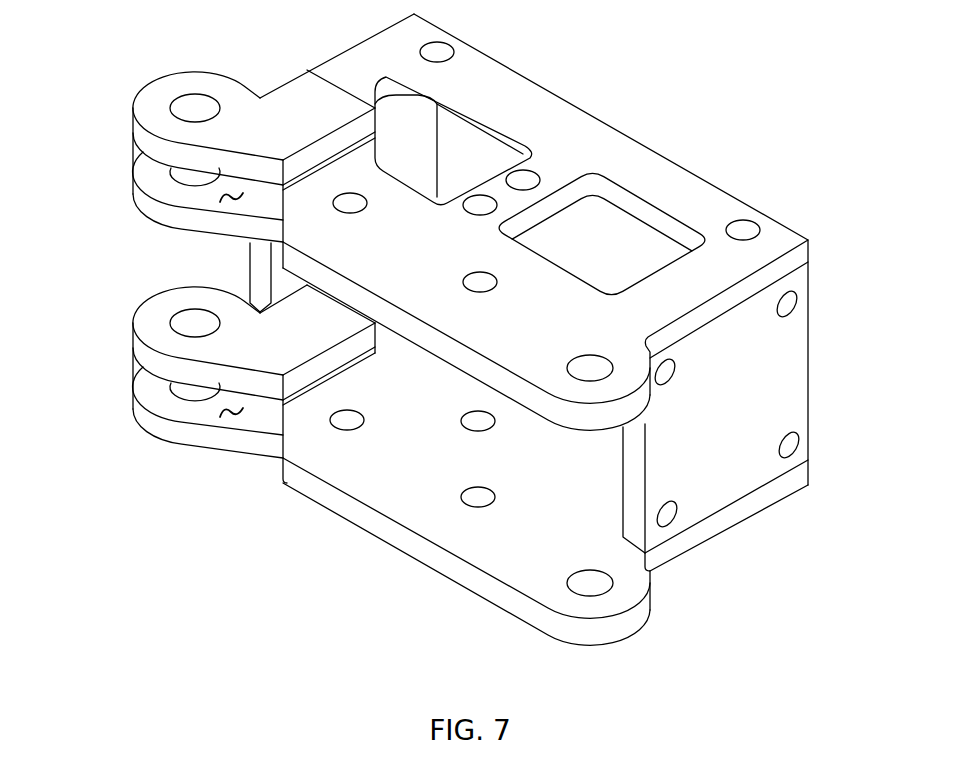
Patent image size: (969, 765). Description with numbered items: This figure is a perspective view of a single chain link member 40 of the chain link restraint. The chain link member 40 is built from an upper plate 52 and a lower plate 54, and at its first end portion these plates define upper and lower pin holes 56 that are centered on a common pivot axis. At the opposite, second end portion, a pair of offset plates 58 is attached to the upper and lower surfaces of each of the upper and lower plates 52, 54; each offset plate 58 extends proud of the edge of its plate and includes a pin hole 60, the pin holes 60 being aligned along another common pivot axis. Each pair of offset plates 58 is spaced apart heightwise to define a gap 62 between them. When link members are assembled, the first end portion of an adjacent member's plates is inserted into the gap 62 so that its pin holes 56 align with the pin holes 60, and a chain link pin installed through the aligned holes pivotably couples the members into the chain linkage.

The chain link member 40 is at (712, 68).
The upper plate 52 is at (457, 360).
The lower plate 54 is at (430, 552).
The pin holes 56 is at (580, 364).
The offset plates 58 is at (133, 115).
The pin hole 60 is at (191, 173).
The gap 62 is at (230, 198).